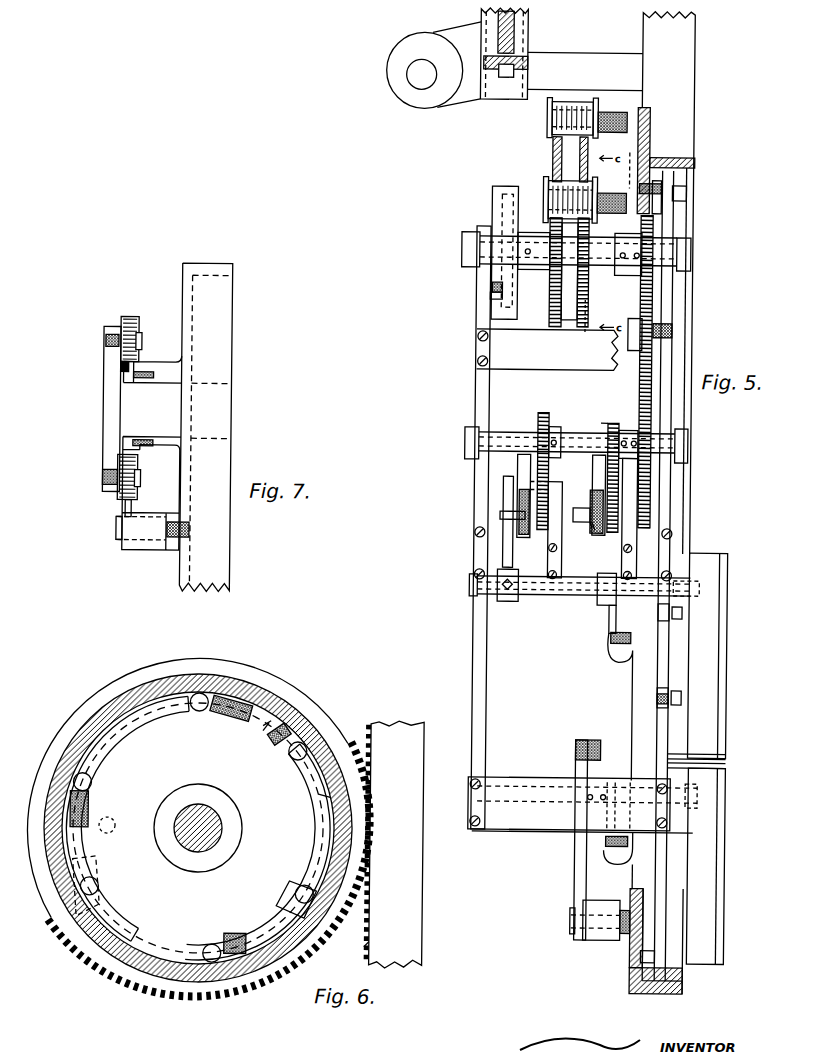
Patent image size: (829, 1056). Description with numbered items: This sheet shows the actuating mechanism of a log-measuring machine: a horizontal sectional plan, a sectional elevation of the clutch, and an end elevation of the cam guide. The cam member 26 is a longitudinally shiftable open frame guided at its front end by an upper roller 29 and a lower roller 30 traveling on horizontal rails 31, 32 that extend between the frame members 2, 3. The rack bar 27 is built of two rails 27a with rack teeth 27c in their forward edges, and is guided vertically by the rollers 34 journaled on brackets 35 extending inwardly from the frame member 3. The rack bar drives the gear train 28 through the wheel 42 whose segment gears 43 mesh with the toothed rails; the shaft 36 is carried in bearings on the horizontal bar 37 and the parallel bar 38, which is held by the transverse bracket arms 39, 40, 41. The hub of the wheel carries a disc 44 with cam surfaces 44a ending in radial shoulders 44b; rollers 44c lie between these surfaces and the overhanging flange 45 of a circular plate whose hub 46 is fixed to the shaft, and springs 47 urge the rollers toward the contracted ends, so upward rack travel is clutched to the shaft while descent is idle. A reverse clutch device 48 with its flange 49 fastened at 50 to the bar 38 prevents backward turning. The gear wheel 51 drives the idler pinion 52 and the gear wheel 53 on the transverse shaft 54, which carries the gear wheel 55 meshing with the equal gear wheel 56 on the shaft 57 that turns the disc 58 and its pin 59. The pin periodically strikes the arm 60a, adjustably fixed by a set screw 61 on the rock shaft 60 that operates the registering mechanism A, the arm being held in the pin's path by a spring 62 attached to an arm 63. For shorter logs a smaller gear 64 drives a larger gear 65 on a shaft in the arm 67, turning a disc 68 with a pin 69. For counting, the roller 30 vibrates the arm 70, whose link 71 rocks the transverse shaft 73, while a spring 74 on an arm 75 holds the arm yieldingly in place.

In FIG. 5, the frame member 2 is at (640, 941).
In FIG. 7, the frame member 2 is at (205, 427).
In FIG. 5, the frame member 3 is at (679, 283).
In FIG. 7, the cam member 26 is at (103, 410).
In FIG. 5, the rack bar 27 is at (553, 152).
In FIG. 5, the rails 27a is at (553, 147).
In FIG. 6, the rails 27a is at (395, 845).
In FIG. 6, the rack teeth 27c is at (368, 946).
In FIG. 5, the gear train 28 is at (620, 426).
In FIG. 7, the upper roller 29 is at (125, 318).
In FIG. 7, the lower roller 30 is at (117, 497).
In FIG. 7, the upper rail 31 is at (125, 371).
In FIG. 7, the lower rail 32 is at (132, 508).
In FIG. 5, the lower rollers 34 is at (548, 118).
In FIG. 5, the brackets 35 is at (637, 145).
In FIG. 5, the driving shaft 36 is at (690, 255).
In FIG. 6, the driving shaft 36 is at (215, 812).
In FIG. 5, the horizontal bar 37 is at (672, 298).
In FIG. 5, the bar 38 is at (476, 391).
In FIG. 5, the bracket arm 39 is at (547, 349).
In FIG. 5, the bracket arm 40 is at (578, 522).
In FIG. 5, the bracket arm 41 is at (581, 805).
In FIG. 5, the wheel 42 is at (553, 290).
In FIG. 6, the wheel 42 is at (342, 737).
In FIG. 5, the segment gears 43 is at (575, 312).
In FIG. 6, the segment gears 43 is at (352, 750).
In FIG. 6, the disc 44 is at (198, 828).
In FIG. 6, the cam surfaces 44a is at (318, 795).
In FIG. 6, the radial shoulders 44b is at (247, 737).
In FIG. 6, the rollers 44c is at (92, 783).
In FIG. 5, the overhanging flange 45 is at (582, 330).
In FIG. 6, the overhanging flange 45 is at (268, 722).
In FIG. 5, the hub 46 is at (625, 278).
In FIG. 6, the springs 47 is at (290, 735).
In FIG. 5, the clutch device 48 is at (489, 216).
In FIG. 5, the overhanging flange 49 is at (490, 288).
In FIG. 5, the fastening 50 is at (488, 297).
In FIG. 5, the gear wheel 51 is at (652, 228).
In FIG. 5, the idler pinion 52 is at (642, 323).
In FIG. 5, the gear wheel 53 is at (652, 408).
In FIG. 5, the transverse shaft 54 is at (607, 425).
In FIG. 5, the gear wheel 55 is at (540, 415).
In FIG. 5, the gear wheel 56 is at (549, 482).
In FIG. 5, the shaft 57 is at (556, 500).
In FIG. 5, the disc 58 is at (518, 470).
In FIG. 5, the pin 59 is at (500, 514).
In FIG. 5, the rock shaft 60 is at (578, 593).
In FIG. 5, the arm 60a is at (505, 551).
In FIG. 5, the set screw 61 is at (508, 602).
In FIG. 5, the spring 62 is at (618, 657).
In FIG. 5, the arm 63 is at (609, 617).
In FIG. 5, the gear 64 is at (605, 425).
In FIG. 5, the gear 65 is at (605, 528).
In FIG. 5, the arm 67 is at (629, 512).
In FIG. 5, the disc 68 is at (579, 549).
In FIG. 5, the pin 69 is at (605, 528).
In FIG. 5, the arm 70 is at (578, 863).
In FIG. 5, the link 71 is at (598, 742).
In FIG. 5, the transverse shaft 73 is at (699, 797).
In FIG. 5, the spring 74 is at (601, 886).
In FIG. 5, the arm 75 is at (616, 790).
In FIG. 5, the registering mechanism A is at (707, 759).